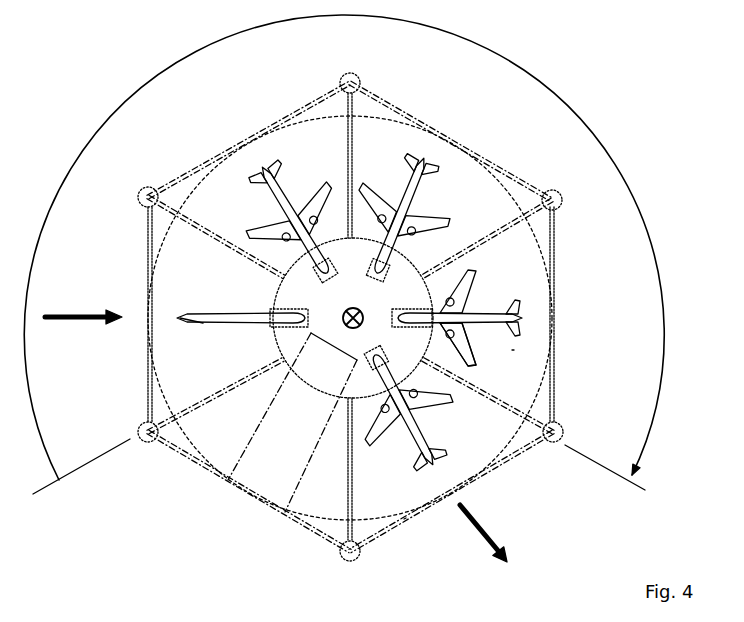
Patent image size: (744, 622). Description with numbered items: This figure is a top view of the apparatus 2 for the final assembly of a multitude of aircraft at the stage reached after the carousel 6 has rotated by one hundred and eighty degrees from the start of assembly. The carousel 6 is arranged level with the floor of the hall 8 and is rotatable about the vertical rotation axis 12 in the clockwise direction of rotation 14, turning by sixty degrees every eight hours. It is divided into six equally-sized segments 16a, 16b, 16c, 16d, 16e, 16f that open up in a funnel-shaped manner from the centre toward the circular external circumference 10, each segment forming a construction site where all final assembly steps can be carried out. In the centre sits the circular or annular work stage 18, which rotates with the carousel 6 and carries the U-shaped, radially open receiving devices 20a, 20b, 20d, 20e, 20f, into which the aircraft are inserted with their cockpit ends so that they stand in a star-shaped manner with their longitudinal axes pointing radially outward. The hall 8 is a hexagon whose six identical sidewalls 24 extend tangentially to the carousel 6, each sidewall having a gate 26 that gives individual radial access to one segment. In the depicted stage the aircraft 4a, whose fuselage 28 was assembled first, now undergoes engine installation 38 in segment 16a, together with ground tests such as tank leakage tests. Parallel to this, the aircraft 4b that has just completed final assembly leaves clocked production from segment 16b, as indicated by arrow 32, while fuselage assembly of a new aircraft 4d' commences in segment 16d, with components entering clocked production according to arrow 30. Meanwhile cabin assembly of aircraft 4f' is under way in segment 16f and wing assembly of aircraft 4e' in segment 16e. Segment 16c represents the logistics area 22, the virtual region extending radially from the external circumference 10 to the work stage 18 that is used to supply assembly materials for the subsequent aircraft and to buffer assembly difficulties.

The apparatus 2 is at (47, 84).
The aircraft 4a is at (483, 290).
The aircraft 4b is at (405, 450).
The aircraft 4d' is at (193, 256).
The aircraft 4e' is at (276, 190).
The aircraft 4f' is at (401, 187).
The carousel 6 is at (549, 233).
The hall 8 is at (569, 213).
The external circumference 10 is at (549, 277).
The rotation axis 12 is at (342, 318).
The direction of rotation 14 is at (33, 262).
The segment 16a is at (514, 349).
The segment 16b is at (460, 434).
The segment 16c is at (227, 434).
The segment 16d is at (173, 305).
The segment 16e is at (288, 148).
The segment 16f is at (470, 180).
The work stage 18 is at (342, 413).
The receiving device 20a is at (405, 330).
The receiving device 20b is at (422, 358).
The receiving device 20d is at (293, 313).
The receiving device 20e is at (330, 265).
The receiving device 20f is at (372, 273).
The logistics area 22 is at (258, 455).
The sidewall 24 is at (362, 542).
The gate 26 is at (404, 519).
The fuselage 28 is at (203, 323).
The enter clocked production 30 is at (83, 304).
The leave clocked production 32 is at (482, 531).
The engine 38 is at (405, 327).